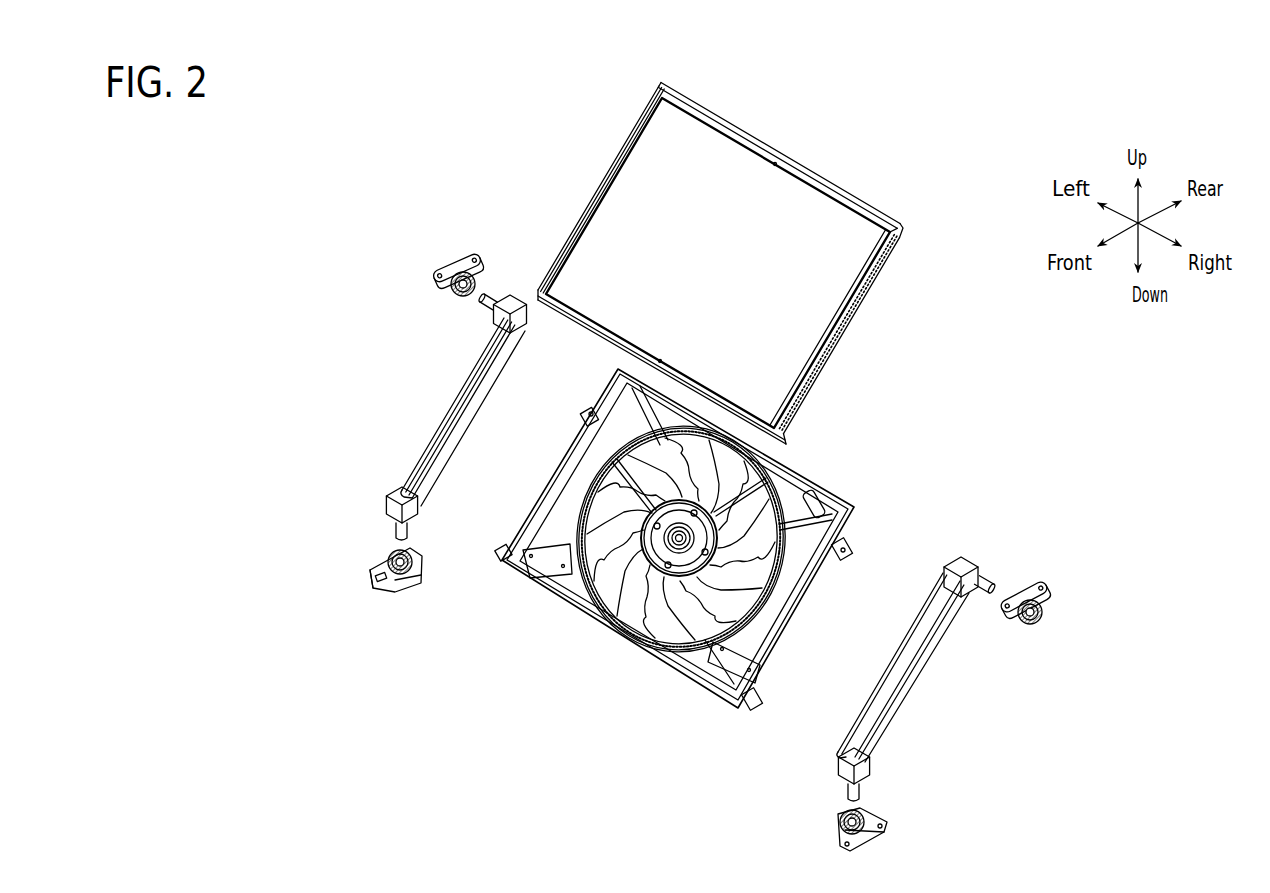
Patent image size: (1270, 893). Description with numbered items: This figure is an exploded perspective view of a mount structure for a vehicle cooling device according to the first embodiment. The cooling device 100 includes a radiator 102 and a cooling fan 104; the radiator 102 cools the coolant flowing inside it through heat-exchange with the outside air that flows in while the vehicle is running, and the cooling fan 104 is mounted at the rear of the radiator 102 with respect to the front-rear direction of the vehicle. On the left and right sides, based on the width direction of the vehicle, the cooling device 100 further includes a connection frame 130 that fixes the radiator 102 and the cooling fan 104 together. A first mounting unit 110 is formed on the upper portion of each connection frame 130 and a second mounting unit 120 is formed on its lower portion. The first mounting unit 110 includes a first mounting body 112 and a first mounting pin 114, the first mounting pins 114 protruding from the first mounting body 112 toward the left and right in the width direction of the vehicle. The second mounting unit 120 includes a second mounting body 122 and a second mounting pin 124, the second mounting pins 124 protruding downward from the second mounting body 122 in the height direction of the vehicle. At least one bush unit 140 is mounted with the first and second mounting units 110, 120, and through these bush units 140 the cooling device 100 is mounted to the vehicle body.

The cooling device 100 is at (561, 211).
The radiator 102 is at (632, 175).
The cooling fan 104 is at (562, 590).
The first mounting unit 110 is at (397, 305).
The first mounting body 112 is at (490, 320).
The first mounting pin 114 is at (490, 300).
The second mounting unit 120 is at (326, 477).
The second mounting body 122 is at (387, 503).
The second mounting pin 124 is at (398, 532).
The connection frame 130 is at (427, 457).
The bush unit 140 is at (431, 271).